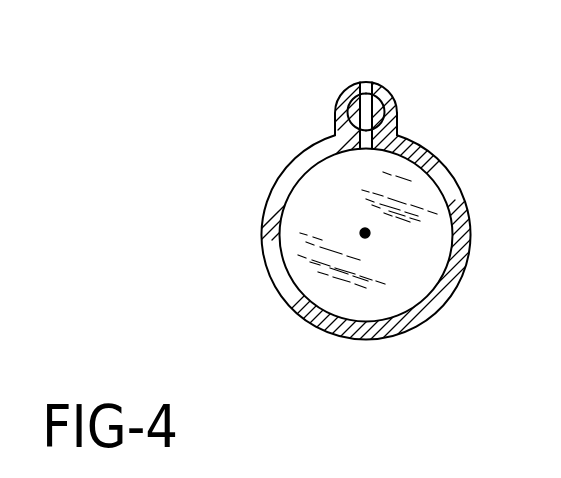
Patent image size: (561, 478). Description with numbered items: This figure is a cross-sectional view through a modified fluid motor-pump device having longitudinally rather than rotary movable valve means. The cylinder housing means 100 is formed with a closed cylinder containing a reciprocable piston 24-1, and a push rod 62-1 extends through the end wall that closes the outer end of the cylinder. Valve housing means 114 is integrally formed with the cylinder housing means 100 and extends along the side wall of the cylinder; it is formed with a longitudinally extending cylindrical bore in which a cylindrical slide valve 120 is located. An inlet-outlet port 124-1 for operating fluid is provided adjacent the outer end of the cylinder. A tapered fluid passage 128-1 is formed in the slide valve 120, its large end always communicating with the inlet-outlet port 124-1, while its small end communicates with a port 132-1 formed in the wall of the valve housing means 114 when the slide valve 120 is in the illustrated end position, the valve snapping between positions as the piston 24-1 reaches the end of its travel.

The cylinder housing means 100 is at (432, 315).
The reciprocable piston 24-1 is at (313, 188).
The valve housing means 114 is at (336, 113).
The inlet-outlet port 124-1 is at (398, 128).
The cylindrical slide valve 120 is at (356, 110).
The tapered fluid passage 128-1 is at (383, 103).
The port 132-1 is at (368, 82).
The push rod 62-1 is at (370, 233).